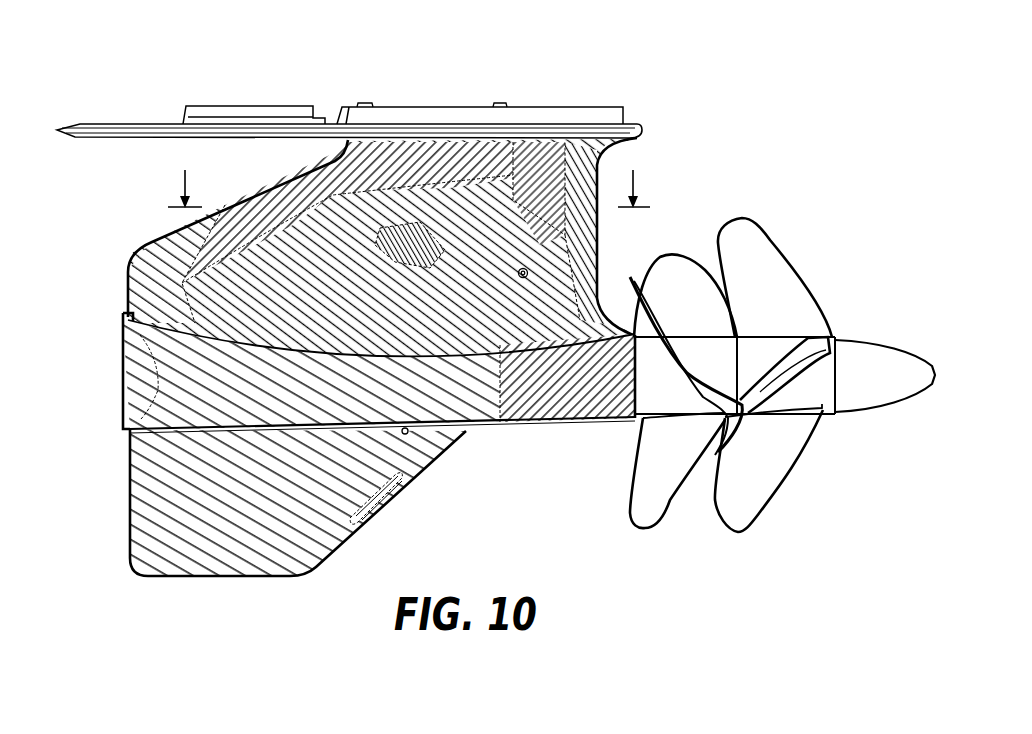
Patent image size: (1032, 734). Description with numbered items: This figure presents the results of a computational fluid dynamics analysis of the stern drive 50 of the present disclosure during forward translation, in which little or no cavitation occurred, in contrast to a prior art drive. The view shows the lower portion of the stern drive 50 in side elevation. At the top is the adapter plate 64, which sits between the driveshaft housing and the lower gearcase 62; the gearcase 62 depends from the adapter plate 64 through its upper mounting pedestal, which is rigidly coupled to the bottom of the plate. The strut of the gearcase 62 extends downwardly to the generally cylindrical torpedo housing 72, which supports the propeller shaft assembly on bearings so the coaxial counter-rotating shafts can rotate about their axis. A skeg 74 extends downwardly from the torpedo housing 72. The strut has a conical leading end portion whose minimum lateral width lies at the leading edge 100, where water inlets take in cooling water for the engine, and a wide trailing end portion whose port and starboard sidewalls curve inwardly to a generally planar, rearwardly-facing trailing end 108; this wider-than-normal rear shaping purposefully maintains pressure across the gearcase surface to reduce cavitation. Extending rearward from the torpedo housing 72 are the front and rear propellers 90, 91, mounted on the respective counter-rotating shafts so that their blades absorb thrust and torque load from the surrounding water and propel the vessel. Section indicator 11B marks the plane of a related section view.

The stern drive 50 is at (704, 84).
The adapter plate 64 is at (632, 132).
The trailing end 108 is at (150, 263).
The leading edge 100 is at (606, 249).
The section line 11B is at (409, 188).
The lower gearcase 62 is at (480, 388).
The torpedo housing 72 is at (135, 403).
The skeg 74 is at (157, 545).
The front propeller 90 is at (840, 282).
The rear propeller 91 is at (612, 484).